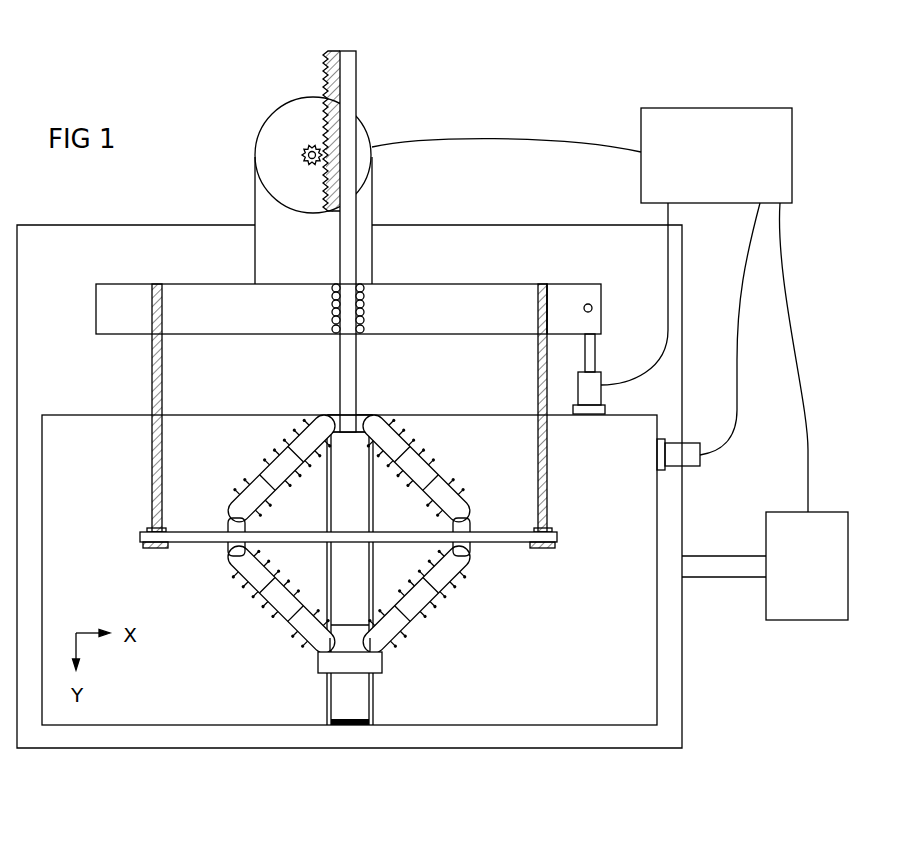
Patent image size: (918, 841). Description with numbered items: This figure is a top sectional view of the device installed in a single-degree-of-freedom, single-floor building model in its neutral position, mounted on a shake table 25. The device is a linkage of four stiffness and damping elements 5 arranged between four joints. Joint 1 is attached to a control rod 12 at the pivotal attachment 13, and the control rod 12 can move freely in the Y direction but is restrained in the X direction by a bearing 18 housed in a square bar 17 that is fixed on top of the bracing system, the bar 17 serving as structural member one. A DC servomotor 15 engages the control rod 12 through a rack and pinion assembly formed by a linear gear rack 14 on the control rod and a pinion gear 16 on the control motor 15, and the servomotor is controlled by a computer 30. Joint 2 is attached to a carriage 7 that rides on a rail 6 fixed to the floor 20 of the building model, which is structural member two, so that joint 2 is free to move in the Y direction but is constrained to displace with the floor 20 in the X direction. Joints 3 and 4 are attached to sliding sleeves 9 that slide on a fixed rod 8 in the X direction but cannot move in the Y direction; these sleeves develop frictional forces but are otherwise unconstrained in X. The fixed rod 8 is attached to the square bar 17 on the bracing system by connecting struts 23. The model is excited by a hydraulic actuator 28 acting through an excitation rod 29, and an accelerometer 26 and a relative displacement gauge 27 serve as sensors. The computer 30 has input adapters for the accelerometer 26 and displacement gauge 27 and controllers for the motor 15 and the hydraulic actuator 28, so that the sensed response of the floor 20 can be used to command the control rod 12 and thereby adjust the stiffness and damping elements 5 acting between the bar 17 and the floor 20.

The joint 1 is at (321, 396).
The joint 2 is at (297, 678).
The joint 3 is at (494, 560).
The joint 4 is at (205, 560).
The stiffness and damping element 5 is at (432, 606).
The rail 6 is at (350, 712).
The carriage on rail 7 is at (375, 664).
The fixed rod 8 is at (192, 533).
The sliding sleeve 9 is at (480, 524).
The control rod 12 is at (343, 259).
The pivotal attachment of two stiffness/damping elements to control rod 13 is at (362, 422).
The linear gear rack on control rod 14 is at (325, 74).
The control motor 15 is at (272, 180).
The pinion gear on control motor 16 is at (305, 148).
The bar fixed to bracing 17 is at (483, 292).
The bearing for control rod 18 is at (365, 284).
The floor 20 is at (591, 465).
The attachment strut 23 is at (538, 368).
The shake table 25 is at (597, 748).
The accelerometer 26 is at (693, 446).
The relative displacement gauge 27 is at (601, 382).
The hydraulic actuator 28 is at (791, 574).
The excitation rod from hydraulic actuator 29 is at (735, 578).
The computer 30 is at (704, 184).